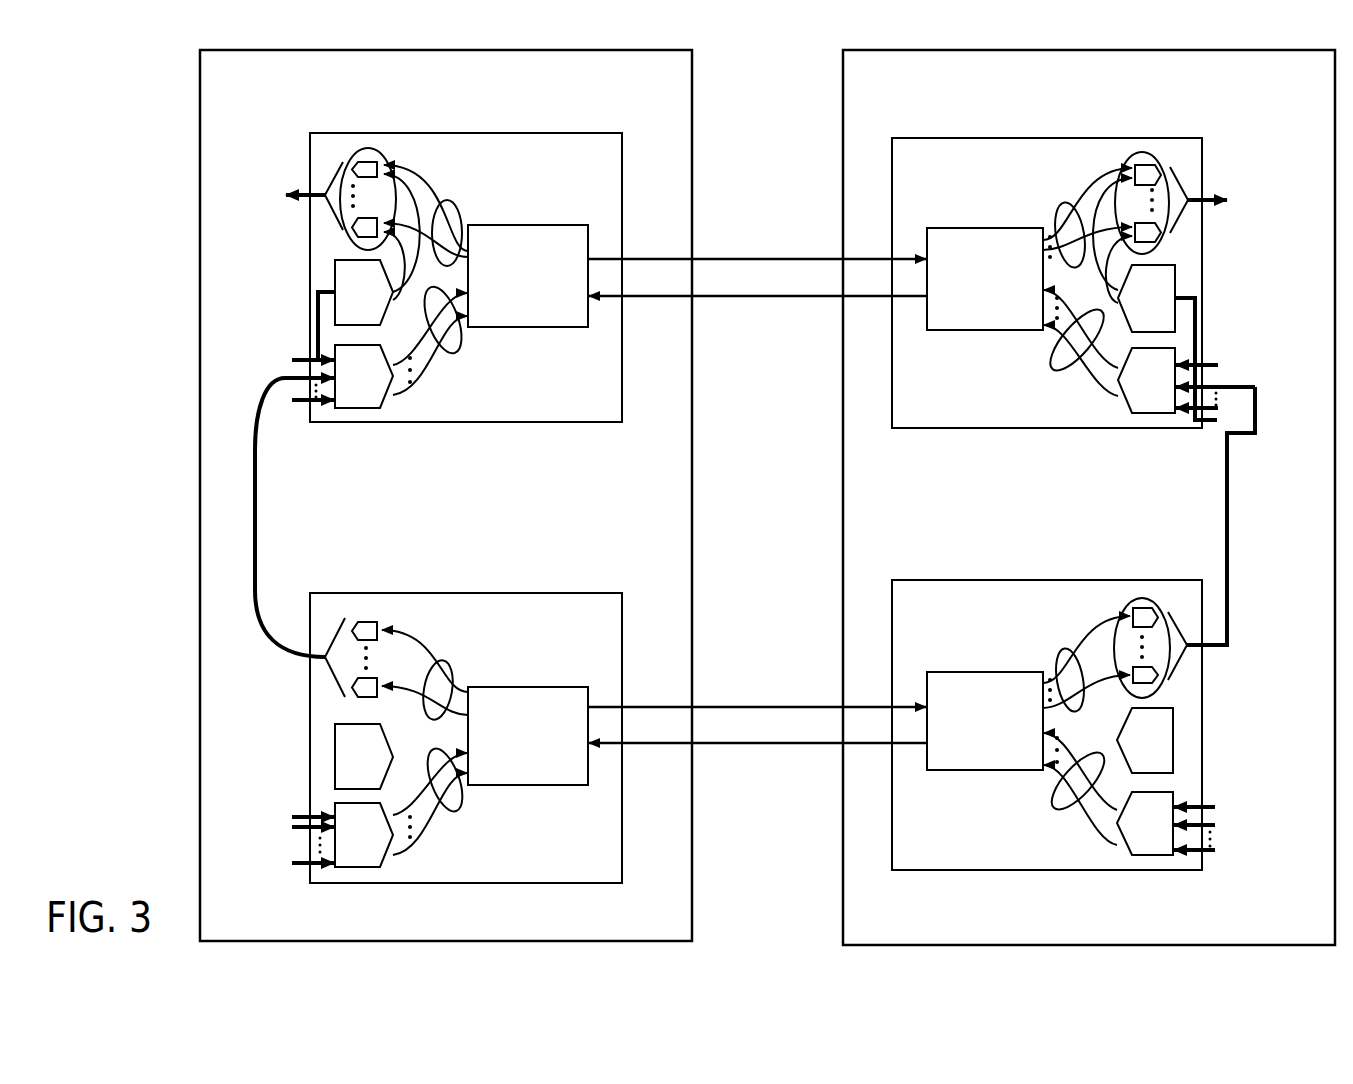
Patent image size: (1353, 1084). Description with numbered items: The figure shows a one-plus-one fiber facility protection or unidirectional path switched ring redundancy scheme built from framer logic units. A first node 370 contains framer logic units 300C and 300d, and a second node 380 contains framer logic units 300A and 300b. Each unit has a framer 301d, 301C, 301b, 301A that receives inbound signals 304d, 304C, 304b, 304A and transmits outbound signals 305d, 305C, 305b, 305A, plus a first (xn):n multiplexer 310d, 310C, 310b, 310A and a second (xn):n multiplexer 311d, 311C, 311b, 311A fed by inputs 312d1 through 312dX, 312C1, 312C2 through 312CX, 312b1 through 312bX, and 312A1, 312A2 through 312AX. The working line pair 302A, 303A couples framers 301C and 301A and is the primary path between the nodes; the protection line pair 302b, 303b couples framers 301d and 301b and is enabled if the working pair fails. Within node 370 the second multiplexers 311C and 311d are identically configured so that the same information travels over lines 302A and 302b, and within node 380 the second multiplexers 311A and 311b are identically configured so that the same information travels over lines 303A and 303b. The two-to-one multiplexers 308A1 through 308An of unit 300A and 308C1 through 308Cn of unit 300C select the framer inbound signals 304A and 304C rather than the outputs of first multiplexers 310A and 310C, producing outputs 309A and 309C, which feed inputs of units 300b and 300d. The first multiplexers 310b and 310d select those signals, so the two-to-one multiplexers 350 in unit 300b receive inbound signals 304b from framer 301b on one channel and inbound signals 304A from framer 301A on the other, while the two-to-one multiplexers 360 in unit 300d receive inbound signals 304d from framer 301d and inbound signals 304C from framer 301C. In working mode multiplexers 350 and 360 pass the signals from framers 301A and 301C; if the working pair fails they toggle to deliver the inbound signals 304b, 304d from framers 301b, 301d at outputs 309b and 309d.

The first node 370 is at (663, 92).
The second node 380 is at (1322, 94).
The framer logic unit 300d is at (603, 164).
The framer logic unit 300C is at (604, 627).
The framer logic unit 300b is at (950, 169).
The framer logic unit 300A is at (951, 619).
The framer 301d is at (500, 304).
The framer 301C is at (500, 762).
The framer 301b is at (959, 309).
The framer 301A is at (959, 754).
The 2:1 multiplexers 360 is at (372, 141).
The 2:1 multiplexers 350 is at (1140, 148).
The inbound signals 304d is at (447, 203).
The inbound signals 304C is at (450, 675).
The inbound signals 304b is at (1060, 207).
The inbound signals 304A is at (1060, 652).
The outbound signals 305d is at (452, 357).
The outbound signals 305C is at (452, 806).
The outbound signals 305b is at (1057, 355).
The outbound signals 305A is at (1057, 800).
The first (xn):n multiplexer 310d is at (338, 268).
The first (xn):n multiplexer 310C is at (375, 747).
The first (xn):n multiplexer 310b is at (1168, 272).
The first (xn):n multiplexer 310A is at (1122, 748).
The second (xn):n multiplexer 311d is at (388, 400).
The second (xn):n multiplexer 311C is at (380, 860).
The second (xn):n multiplexer 311b is at (1124, 407).
The second (xn):n multiplexer 311A is at (1143, 857).
The output 309d is at (289, 190).
The output 309b is at (1212, 197).
The output 309C is at (300, 505).
The output 309A is at (1228, 570).
The input 312d1 is at (292, 358).
The input 312dX is at (296, 408).
The input 312C1 is at (291, 816).
The input 312C2 is at (291, 826).
The input 312CX is at (291, 864).
The input 312b1 is at (1219, 364).
The input 312bX is at (1210, 428).
The input 312A1 is at (1215, 807).
The input 312A2 is at (1216, 826).
The input 312AX is at (1216, 851).
The 2:1 multiplexer 308C1 is at (373, 624).
The 2:1 multiplexer 308Cn is at (357, 693).
The 2:1 multiplexer 308A1 is at (1152, 598).
The 2:1 multiplexer 308An is at (1150, 680).
The protection networking line 302b is at (768, 258).
The protection networking line 303b is at (768, 298).
The working networking line 302A is at (768, 706).
The working networking line 303A is at (768, 745).